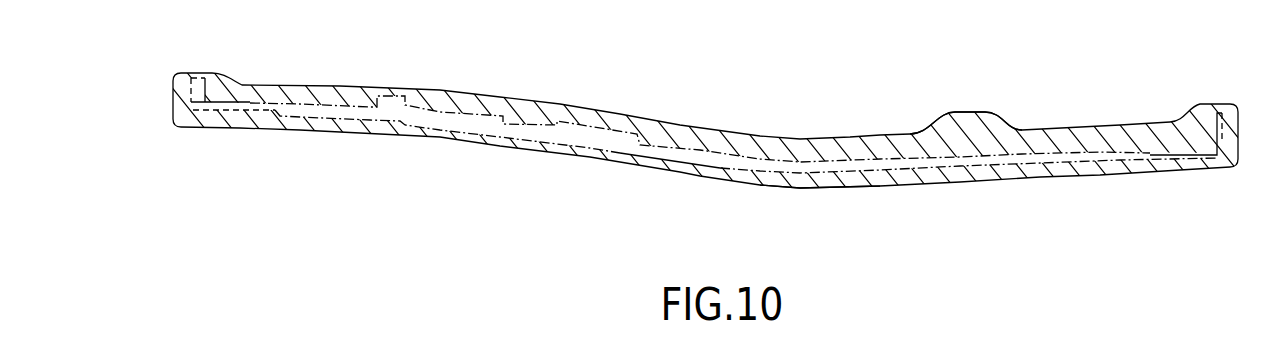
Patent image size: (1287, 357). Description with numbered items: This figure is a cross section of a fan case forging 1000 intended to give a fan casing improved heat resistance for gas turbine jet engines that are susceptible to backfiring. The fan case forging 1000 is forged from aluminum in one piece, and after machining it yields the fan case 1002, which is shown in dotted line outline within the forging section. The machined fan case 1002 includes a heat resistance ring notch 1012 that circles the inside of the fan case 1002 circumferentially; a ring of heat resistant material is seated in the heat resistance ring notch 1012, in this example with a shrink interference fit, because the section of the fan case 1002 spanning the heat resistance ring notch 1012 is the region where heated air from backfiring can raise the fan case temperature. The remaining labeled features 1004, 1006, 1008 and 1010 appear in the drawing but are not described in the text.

The fan case forging 1000 is at (1130, 127).
The fan case 1002 is at (1048, 157).
The inner core 1004 is at (532, 130).
The lower wall 1006 is at (663, 150).
The protrusion 1008 is at (972, 157).
The upper wall 1010 is at (358, 120).
The heat resistance ring notch 1012 is at (897, 170).